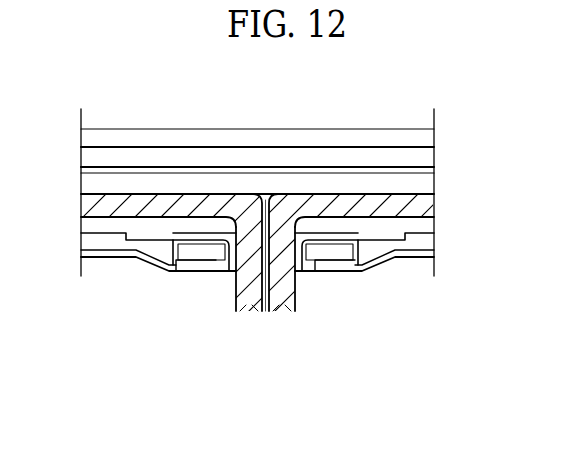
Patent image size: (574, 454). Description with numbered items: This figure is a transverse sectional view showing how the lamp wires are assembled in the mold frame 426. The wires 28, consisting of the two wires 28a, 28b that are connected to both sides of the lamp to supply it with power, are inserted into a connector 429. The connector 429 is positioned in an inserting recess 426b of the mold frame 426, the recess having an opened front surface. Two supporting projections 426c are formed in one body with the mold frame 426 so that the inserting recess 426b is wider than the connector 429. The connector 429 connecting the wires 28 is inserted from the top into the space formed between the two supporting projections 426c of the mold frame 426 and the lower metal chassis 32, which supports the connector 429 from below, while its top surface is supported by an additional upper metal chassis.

The mold frame 426 is at (425, 186).
The inserting recess 426b is at (175, 272).
The supporting projections 426c is at (138, 241).
The connector 429 is at (338, 254).
The lower metal chassis 32 is at (162, 263).
The wires 28 is at (273, 305).
The wire 28a is at (252, 313).
The wire 28b is at (282, 313).